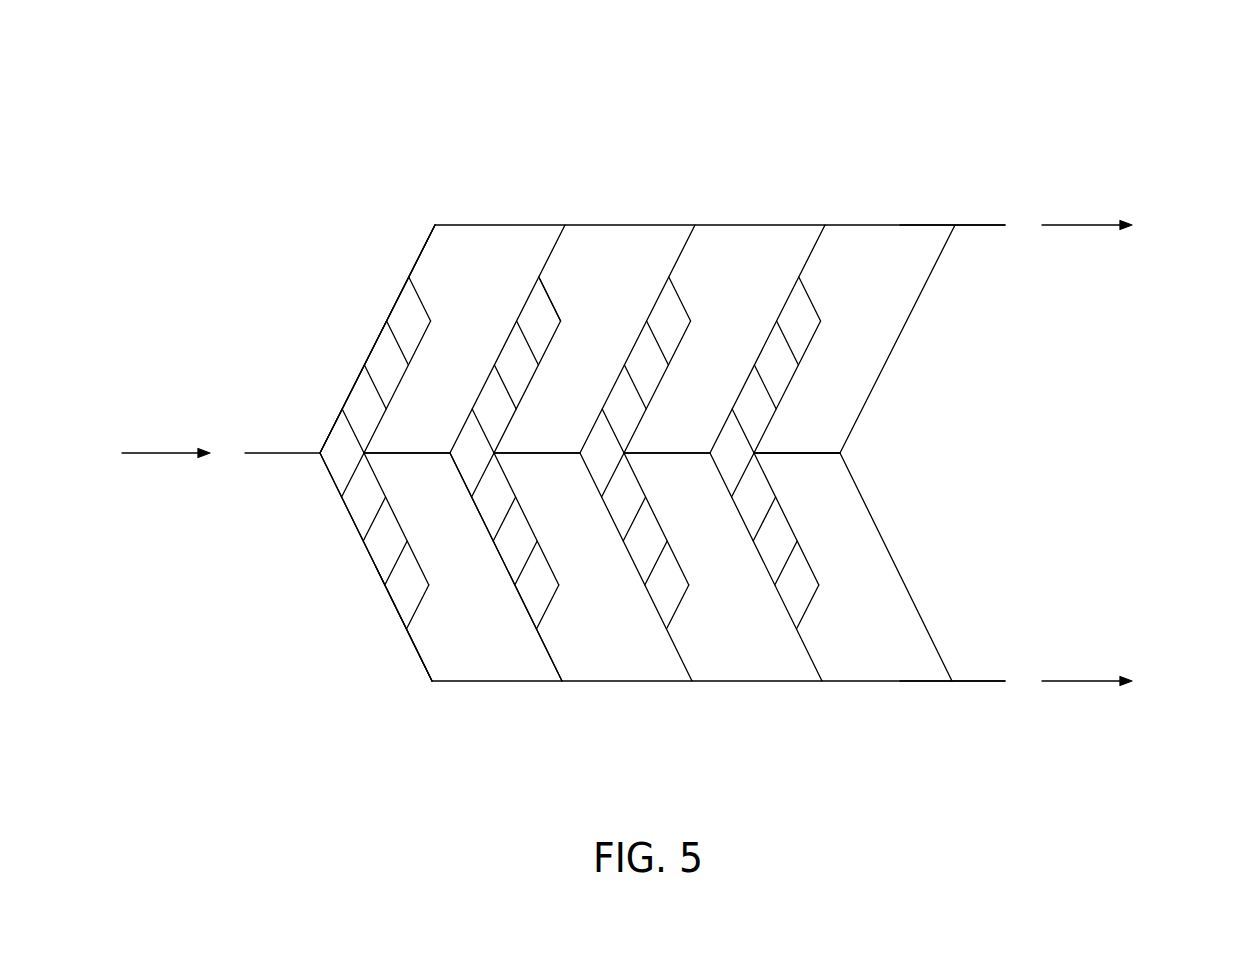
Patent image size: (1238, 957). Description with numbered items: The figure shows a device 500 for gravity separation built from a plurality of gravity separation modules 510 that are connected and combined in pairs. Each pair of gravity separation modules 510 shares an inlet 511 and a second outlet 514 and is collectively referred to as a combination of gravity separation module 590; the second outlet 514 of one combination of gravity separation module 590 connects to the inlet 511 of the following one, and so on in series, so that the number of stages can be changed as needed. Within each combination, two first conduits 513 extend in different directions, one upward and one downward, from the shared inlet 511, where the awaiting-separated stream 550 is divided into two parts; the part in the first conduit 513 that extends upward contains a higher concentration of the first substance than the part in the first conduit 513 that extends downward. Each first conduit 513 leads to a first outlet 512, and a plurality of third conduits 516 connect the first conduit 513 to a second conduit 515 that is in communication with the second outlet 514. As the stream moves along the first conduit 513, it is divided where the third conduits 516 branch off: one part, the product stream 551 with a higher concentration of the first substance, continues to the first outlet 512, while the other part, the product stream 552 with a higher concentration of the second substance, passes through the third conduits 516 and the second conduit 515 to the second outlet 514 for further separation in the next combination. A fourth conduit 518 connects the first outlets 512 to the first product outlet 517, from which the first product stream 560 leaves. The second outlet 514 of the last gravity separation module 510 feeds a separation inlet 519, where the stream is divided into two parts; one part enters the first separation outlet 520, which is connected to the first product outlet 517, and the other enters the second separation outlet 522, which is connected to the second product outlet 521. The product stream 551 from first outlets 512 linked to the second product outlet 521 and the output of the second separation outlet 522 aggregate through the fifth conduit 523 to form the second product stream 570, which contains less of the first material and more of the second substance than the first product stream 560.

The device for gravity separation 500 is at (1060, 107).
The gravity separation module 510 is at (347, 308).
The inlet 511 is at (282, 453).
The first outlet 512 is at (422, 250).
The first conduit 513 is at (380, 338).
The second outlet 514 is at (425, 453).
The second conduit 515 is at (538, 372).
The third conduits 516 is at (423, 297).
The first product outlet 517 is at (975, 225).
The fourth conduit 518 is at (627, 225).
The separation inlet 519 is at (817, 453).
The first separation outlet 520 is at (899, 338).
The second product outlet 521 is at (978, 683).
The second separation outlet 522 is at (897, 565).
The fifth conduit 523 is at (763, 683).
The awaiting-separated stream 550 is at (165, 453).
The product stream 551 is at (425, 247).
The product stream 552 is at (551, 297).
The first product stream 560 is at (1087, 225).
The second product stream 570 is at (1087, 681).
The combination of gravity separation module 590 is at (397, 642).